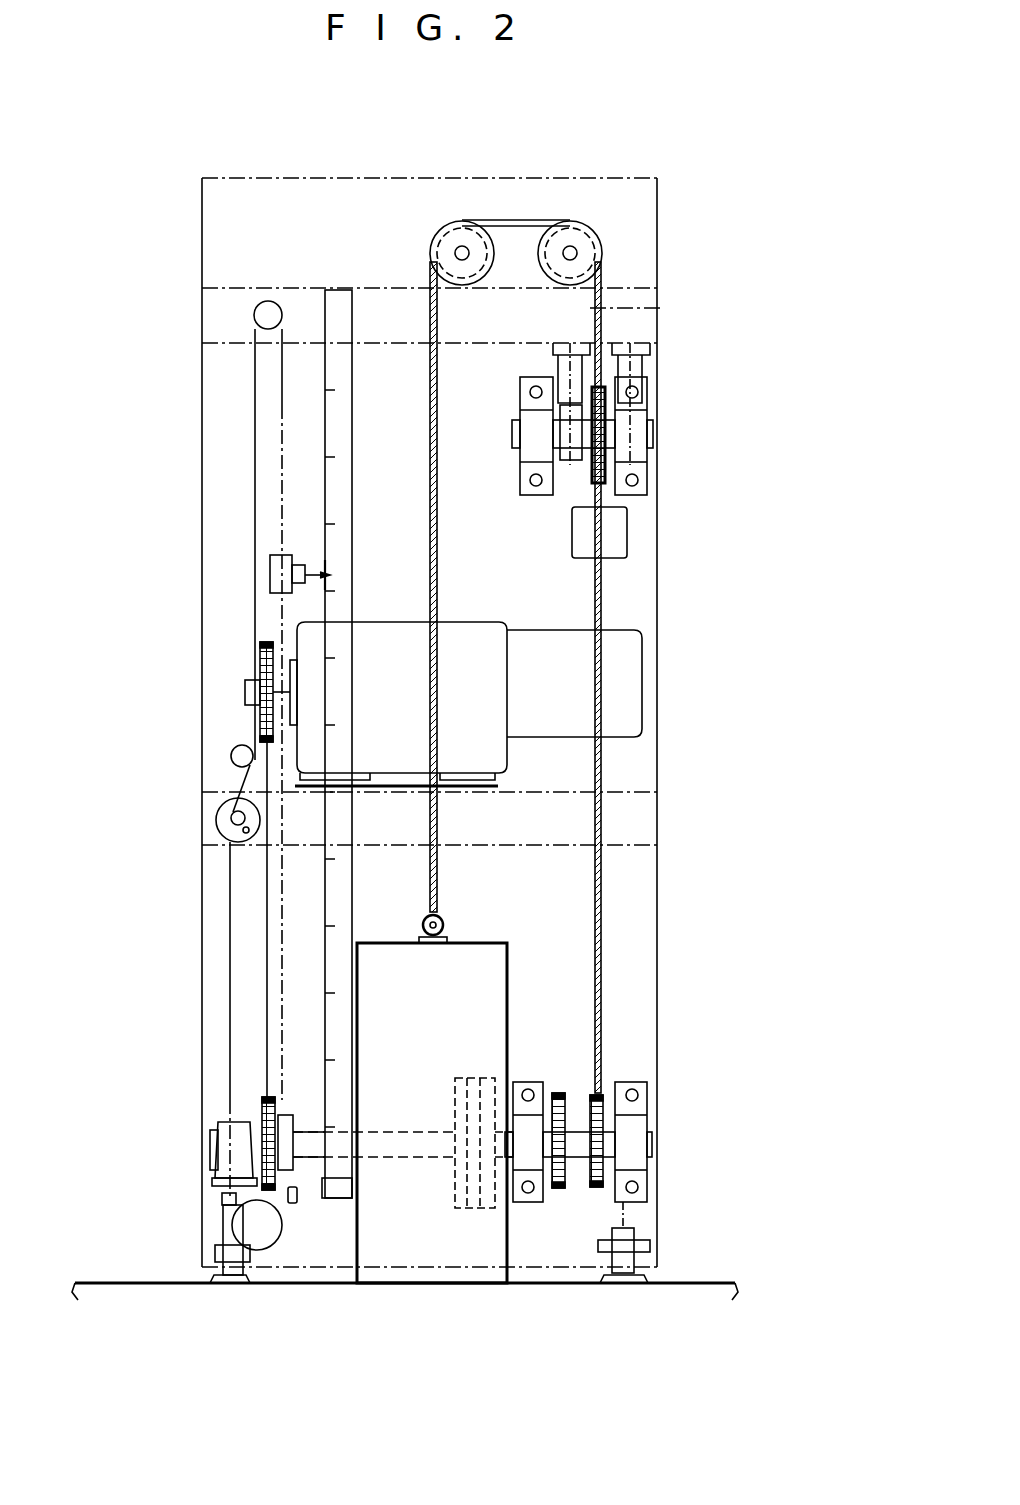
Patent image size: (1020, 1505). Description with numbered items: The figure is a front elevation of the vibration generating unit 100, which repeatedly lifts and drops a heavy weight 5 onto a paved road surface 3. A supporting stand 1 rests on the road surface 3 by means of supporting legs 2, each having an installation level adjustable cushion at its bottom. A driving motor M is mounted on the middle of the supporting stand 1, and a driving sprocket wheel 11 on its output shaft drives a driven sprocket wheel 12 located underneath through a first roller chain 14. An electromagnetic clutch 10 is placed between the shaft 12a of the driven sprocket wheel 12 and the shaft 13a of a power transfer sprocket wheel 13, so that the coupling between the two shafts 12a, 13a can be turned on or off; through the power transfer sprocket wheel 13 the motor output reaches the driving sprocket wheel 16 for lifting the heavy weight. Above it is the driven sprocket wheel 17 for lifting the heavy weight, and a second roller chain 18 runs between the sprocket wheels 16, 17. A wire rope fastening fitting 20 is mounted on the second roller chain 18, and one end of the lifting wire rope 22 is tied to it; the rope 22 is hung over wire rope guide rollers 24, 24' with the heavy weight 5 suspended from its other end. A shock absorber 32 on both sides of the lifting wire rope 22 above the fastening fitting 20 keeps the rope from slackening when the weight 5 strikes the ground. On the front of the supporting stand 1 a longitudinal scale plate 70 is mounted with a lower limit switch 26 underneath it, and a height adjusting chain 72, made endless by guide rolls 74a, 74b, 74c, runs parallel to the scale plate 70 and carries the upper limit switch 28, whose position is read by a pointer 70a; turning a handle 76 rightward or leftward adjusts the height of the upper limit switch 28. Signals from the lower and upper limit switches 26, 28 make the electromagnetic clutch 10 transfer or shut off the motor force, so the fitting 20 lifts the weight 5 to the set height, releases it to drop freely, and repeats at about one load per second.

The vibration generating unit 100 is at (442, 172).
The wire rope guide roller 24 is at (484, 202).
The wire rope guide roller 24' is at (606, 202).
The lifting wire rope 22 is at (525, 222).
The guide roll 74b is at (258, 312).
The height adjusting chain 72 is at (255, 365).
The longitudinal scale plate 70 is at (330, 425).
The pointer 70a is at (323, 572).
The upper limit switch 28 is at (270, 578).
The shock absorber 32 is at (570, 345).
The driven sprocket wheel for lifting the heavy weight 17 is at (630, 470).
The wire rope fastening fitting 20 is at (620, 533).
The driving motor M is at (490, 628).
The driving sprocket wheel 11 is at (254, 665).
The guide roll 74c is at (229, 754).
The handle 76 is at (216, 815).
The second roller chain 18 is at (610, 768).
The supporting stand 1 is at (637, 773).
The heavy weight 5 is at (395, 957).
The first roller chain 14 is at (265, 962).
The shaft 12a is at (317, 1133).
The driven sprocket wheel 12 is at (262, 1110).
The electromagnetic clutch 10 is at (475, 1078).
The power transfer sprocket wheel 13 is at (560, 1095).
The shaft 13a is at (598, 1105).
The driving sprocket wheel for lifting the heavy weight 16 is at (600, 1120).
The supporting leg 2 is at (640, 1270).
The paved road surface 3 is at (710, 1283).
The guide roll 74a is at (270, 1243).
The lower limit switch 26 is at (298, 1205).